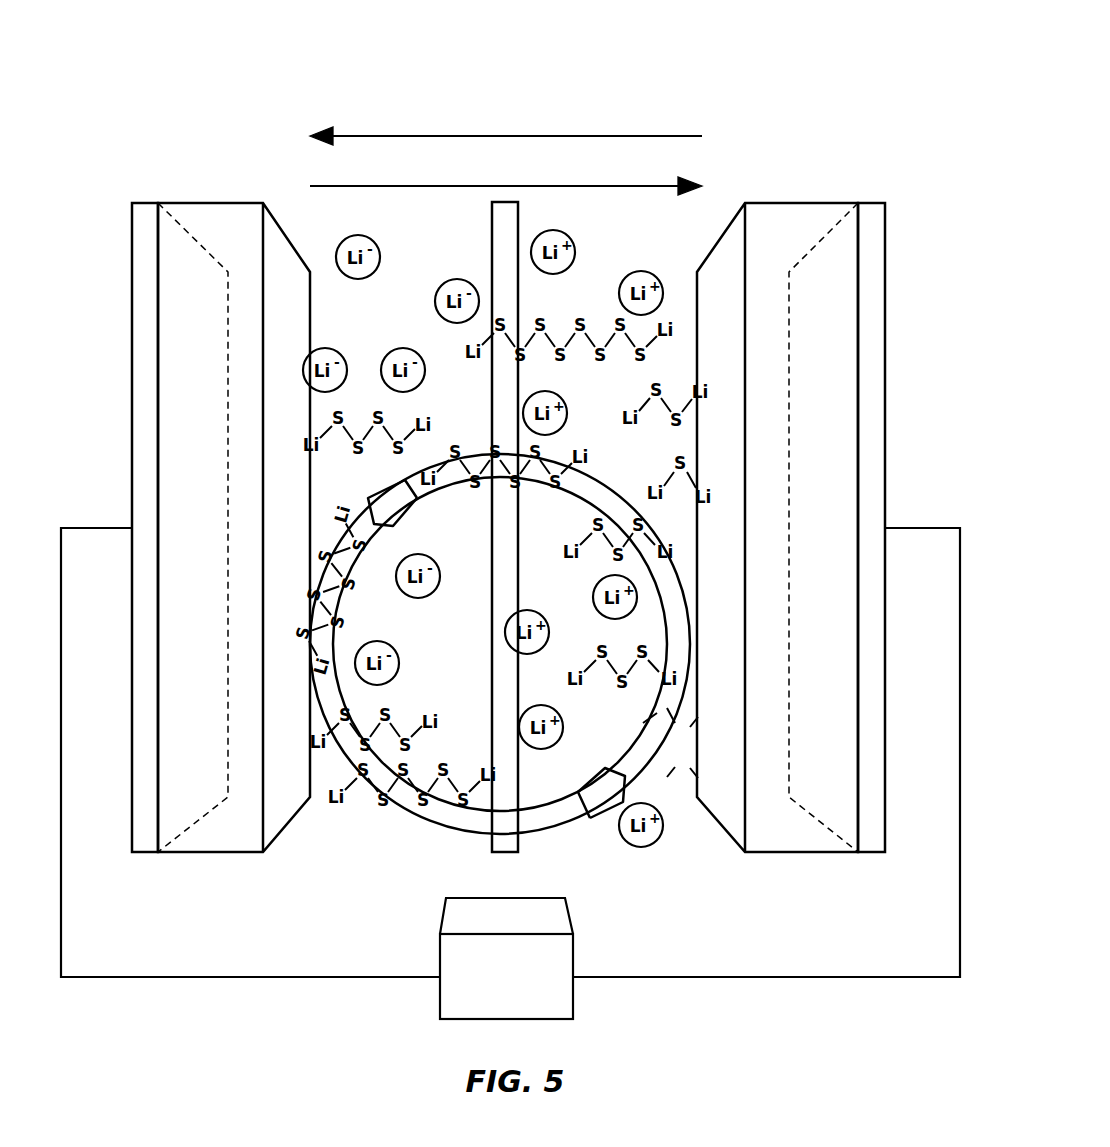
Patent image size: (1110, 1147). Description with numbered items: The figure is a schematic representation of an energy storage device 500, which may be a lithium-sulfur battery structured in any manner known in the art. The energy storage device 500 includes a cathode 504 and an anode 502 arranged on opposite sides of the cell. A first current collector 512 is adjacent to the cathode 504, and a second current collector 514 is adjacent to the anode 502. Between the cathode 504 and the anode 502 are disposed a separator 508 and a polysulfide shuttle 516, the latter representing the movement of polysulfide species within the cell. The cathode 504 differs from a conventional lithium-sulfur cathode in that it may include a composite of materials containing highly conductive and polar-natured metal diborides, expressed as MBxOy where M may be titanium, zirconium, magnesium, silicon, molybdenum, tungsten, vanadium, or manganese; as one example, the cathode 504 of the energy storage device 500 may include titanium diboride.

The energy storage device 500 is at (826, 64).
The anode 502 is at (228, 222).
The cathode 504 is at (830, 215).
The separator 508 is at (508, 790).
The first current collector 512 is at (885, 360).
The second current collector 514 is at (145, 337).
The polysulfide shuttle 516 is at (402, 874).